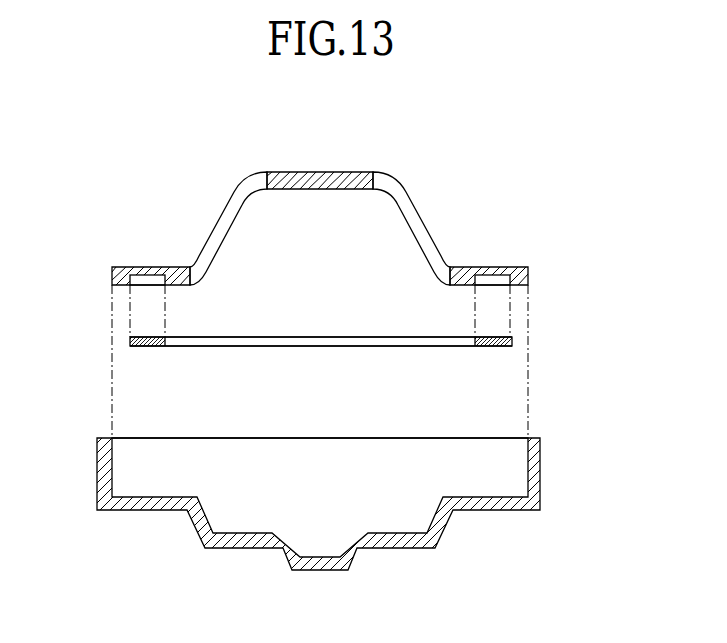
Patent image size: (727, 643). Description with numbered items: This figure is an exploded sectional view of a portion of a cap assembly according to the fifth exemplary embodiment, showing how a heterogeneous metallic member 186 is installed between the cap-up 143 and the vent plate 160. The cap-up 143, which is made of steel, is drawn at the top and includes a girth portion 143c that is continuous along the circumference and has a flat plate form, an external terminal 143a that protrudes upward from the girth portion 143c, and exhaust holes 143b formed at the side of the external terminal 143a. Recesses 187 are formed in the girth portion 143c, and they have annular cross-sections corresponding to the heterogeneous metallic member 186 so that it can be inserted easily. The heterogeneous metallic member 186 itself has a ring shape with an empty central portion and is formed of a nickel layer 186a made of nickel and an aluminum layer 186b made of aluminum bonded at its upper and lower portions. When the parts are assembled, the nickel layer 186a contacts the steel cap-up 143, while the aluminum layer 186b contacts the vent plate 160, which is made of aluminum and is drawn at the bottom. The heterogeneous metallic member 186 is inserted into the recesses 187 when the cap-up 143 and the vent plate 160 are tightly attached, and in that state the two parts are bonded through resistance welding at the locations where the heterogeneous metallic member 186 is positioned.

The cap-up 143 is at (321, 212).
The external terminal 143a is at (328, 172).
The exhaust holes 143b is at (414, 208).
The girth portion 143c is at (486, 267).
The recesses 187 is at (147, 282).
The heterogeneous metallic member 186 is at (361, 338).
The nickel layer 186a is at (497, 337).
The aluminum layer 186b is at (497, 346).
The vent plate 160 is at (538, 470).